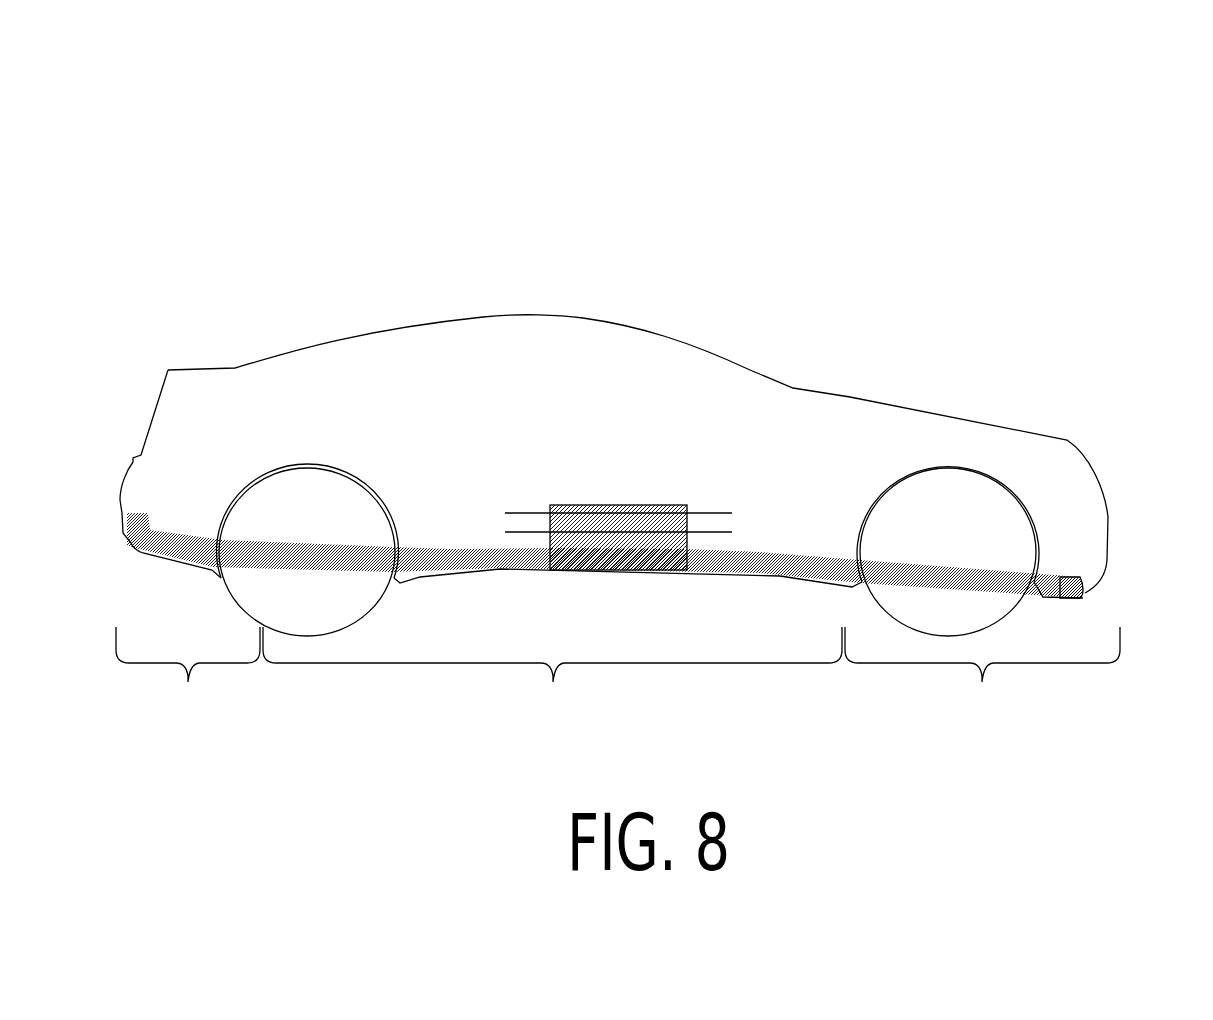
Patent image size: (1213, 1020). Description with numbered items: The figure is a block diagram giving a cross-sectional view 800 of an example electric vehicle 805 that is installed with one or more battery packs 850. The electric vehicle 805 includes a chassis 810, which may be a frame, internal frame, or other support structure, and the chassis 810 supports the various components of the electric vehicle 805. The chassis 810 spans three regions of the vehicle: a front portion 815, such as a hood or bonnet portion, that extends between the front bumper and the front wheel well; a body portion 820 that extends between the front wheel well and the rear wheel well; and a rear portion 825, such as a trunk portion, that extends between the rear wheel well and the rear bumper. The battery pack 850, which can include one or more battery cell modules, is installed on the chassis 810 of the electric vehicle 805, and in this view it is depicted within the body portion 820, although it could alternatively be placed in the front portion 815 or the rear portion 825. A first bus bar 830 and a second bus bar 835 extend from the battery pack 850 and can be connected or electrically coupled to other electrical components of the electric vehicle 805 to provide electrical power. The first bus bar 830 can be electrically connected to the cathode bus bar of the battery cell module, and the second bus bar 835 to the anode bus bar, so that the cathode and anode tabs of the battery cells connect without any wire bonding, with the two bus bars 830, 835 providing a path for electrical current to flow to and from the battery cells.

The cross-sectional view 800 is at (651, 100).
The electric vehicle 805 is at (602, 308).
The chassis 810 is at (1071, 575).
The front portion 815 is at (982, 673).
The body portion 820 is at (552, 674).
The rear portion 825 is at (188, 672).
The first bus bar 830 is at (716, 508).
The second bus bar 835 is at (736, 528).
The battery pack 850 is at (598, 489).